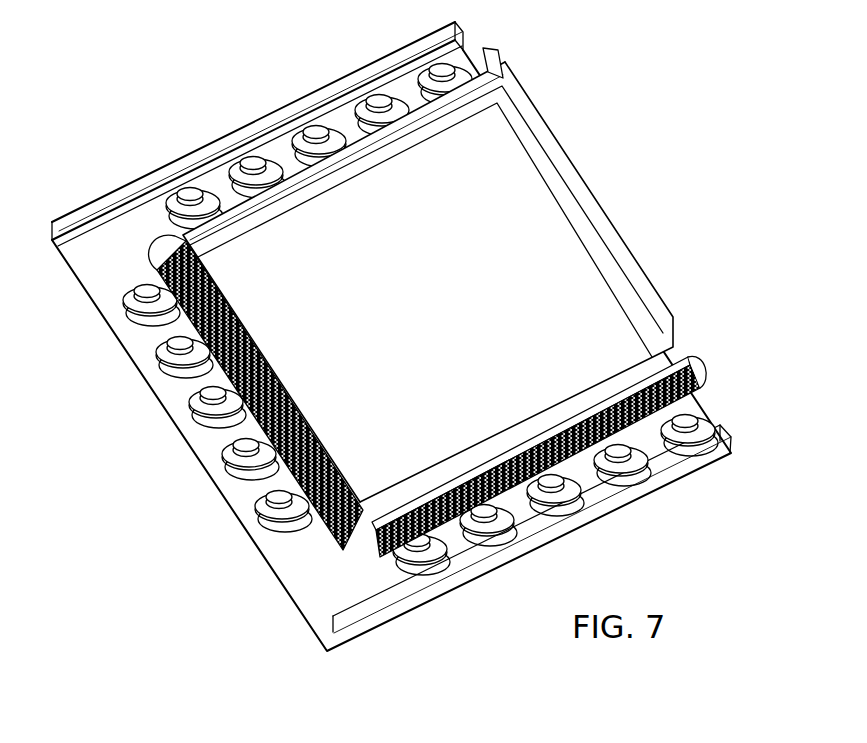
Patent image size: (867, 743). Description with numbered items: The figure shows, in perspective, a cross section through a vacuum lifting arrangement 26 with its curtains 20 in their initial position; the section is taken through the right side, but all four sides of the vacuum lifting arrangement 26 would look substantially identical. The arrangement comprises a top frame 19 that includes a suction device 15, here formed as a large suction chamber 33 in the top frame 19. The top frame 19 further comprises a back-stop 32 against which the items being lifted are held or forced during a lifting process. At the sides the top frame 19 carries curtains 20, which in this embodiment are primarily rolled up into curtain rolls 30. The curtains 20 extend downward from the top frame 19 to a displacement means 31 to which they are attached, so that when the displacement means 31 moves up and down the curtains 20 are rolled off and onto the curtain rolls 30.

The vacuum lifting arrangement 26 is at (124, 116).
The curtain roll 30 is at (493, 60).
The back-stop 32 is at (553, 264).
The suction device 15 is at (489, 282).
The top frame 19 is at (516, 282).
The suction chamber 33 is at (344, 282).
The displacement means 31 is at (231, 504).
The curtain 20 is at (345, 533).